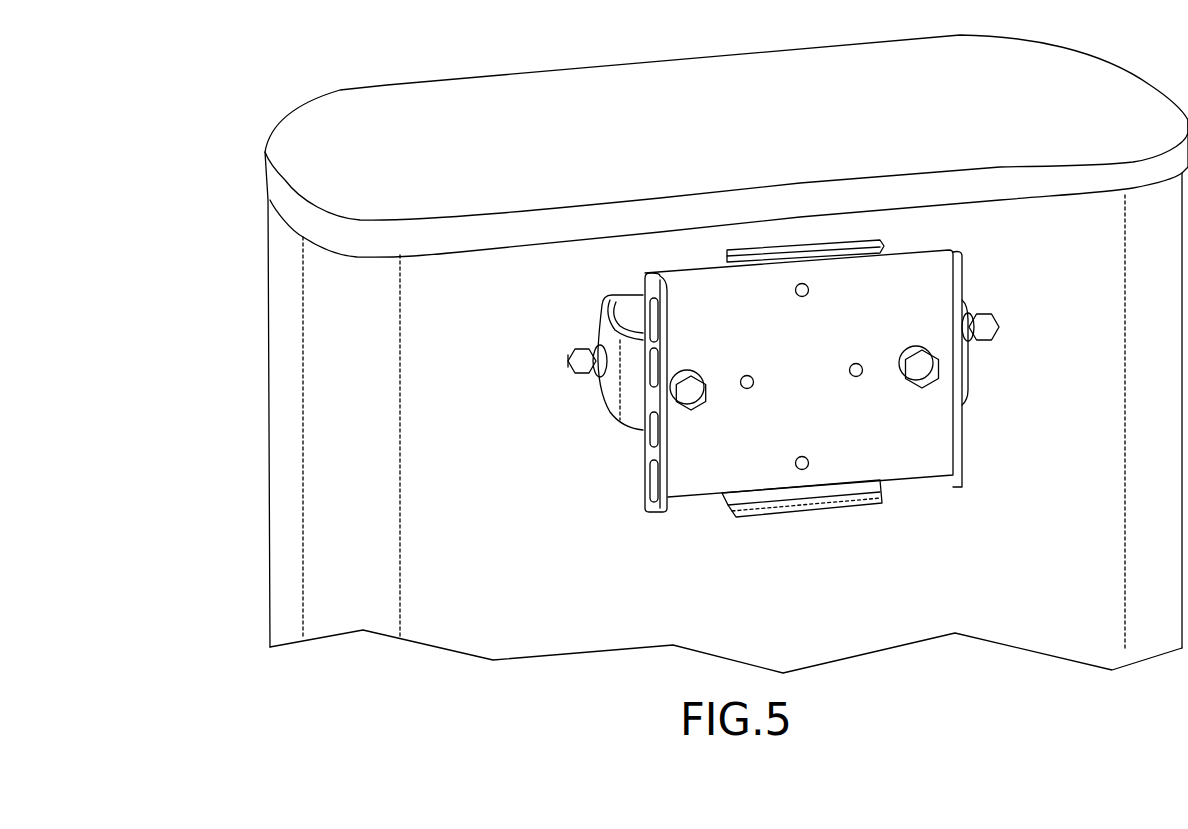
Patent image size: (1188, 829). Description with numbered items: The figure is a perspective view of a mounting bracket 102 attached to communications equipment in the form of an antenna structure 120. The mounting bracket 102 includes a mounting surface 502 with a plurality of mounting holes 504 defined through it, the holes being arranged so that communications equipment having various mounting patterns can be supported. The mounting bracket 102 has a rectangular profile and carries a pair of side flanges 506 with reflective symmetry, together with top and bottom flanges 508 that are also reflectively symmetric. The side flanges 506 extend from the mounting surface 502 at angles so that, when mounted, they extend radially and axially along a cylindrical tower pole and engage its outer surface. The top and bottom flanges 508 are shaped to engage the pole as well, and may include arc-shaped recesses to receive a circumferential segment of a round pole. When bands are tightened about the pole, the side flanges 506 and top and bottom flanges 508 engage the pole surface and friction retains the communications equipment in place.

The mounting bracket 102 is at (819, 356).
The antenna structure 120 is at (277, 400).
The mounting surface 502 is at (850, 290).
The mounting holes 504 is at (710, 378).
The side flanges 506 is at (643, 507).
The top and bottom flanges 508 is at (800, 248).